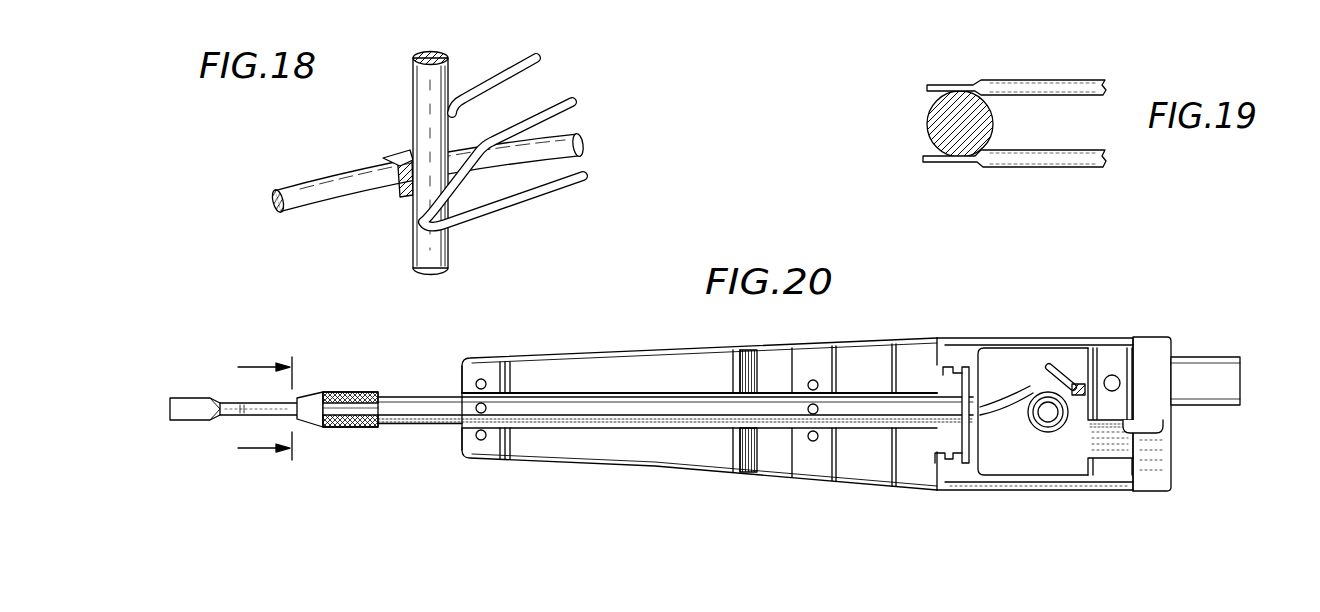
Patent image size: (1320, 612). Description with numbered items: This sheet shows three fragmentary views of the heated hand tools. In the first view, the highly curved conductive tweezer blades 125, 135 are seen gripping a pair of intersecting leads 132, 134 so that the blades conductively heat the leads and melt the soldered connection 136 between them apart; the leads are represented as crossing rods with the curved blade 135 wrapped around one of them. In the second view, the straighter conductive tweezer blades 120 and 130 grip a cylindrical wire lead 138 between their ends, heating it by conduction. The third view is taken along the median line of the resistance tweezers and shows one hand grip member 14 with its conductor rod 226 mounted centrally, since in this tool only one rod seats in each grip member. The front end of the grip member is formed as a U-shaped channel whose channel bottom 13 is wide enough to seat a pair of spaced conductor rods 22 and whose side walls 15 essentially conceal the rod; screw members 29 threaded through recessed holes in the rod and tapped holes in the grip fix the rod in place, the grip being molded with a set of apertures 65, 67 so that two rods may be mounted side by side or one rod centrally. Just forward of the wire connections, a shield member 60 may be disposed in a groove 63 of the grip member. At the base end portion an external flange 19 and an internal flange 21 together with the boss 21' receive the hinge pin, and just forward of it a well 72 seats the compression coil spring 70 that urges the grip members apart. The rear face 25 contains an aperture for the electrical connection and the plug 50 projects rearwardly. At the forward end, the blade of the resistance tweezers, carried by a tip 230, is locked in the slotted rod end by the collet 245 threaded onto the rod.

In FIG. 18, the conductive tweezer blade 125 is at (402, 150).
In FIG. 18, the intersecting lead 132 is at (307, 210).
In FIG. 18, the intersecting lead 134 is at (449, 68).
In FIG. 18, the conductive tweezer blade 135 is at (565, 183).
In FIG. 18, the soldered connection 136 is at (395, 177).
In FIG. 19, the conductive tweezer blade 120 is at (988, 82).
In FIG. 19, the conductive tweezer blade 130 is at (1033, 167).
In FIG. 19, the cylindrical wire lead 138 is at (980, 113).
In FIG. 20, the channel bottom 13 is at (465, 437).
In FIG. 20, the hand grip member 14 is at (631, 475).
In FIG. 20, the side wall 15 is at (683, 325).
In FIG. 20, the external flange 19 is at (1088, 320).
In FIG. 20, the internal flange 21 is at (1035, 508).
In FIG. 20, the boss 21' is at (1177, 433).
In FIG. 20, the conductor rod 22 is at (257, 412).
In FIG. 20, the rear face 25 is at (1173, 466).
In FIG. 20, the screw member 29 is at (477, 405).
In FIG. 20, the plug 50 is at (1210, 362).
In FIG. 20, the shield member 60 is at (968, 384).
In FIG. 20, the groove 63 is at (949, 463).
In FIG. 20, the aperture 65 is at (484, 440).
In FIG. 20, the aperture 67 is at (485, 379).
In FIG. 20, the compression coil spring 70 is at (1030, 422).
In FIG. 20, the well 72 is at (1045, 430).
In FIG. 20, the conductor rod 226 is at (697, 378).
In FIG. 20, the tip 230 is at (253, 400).
In FIG. 20, the collet 245 is at (378, 362).